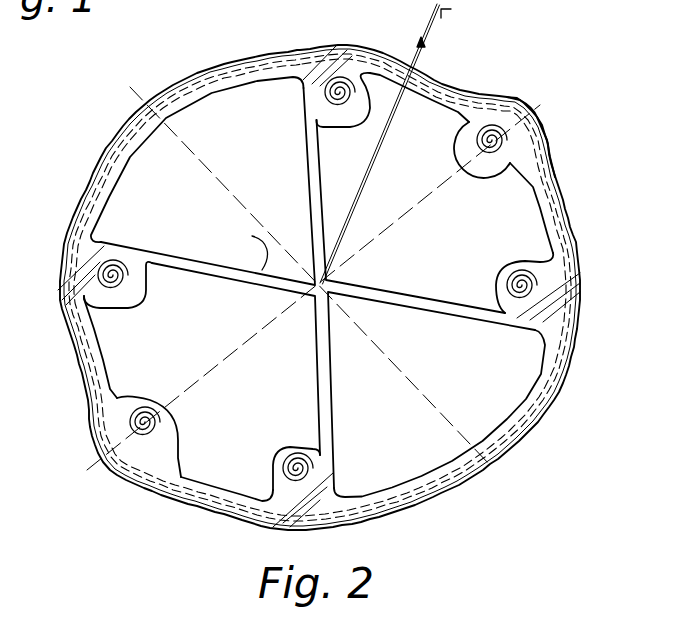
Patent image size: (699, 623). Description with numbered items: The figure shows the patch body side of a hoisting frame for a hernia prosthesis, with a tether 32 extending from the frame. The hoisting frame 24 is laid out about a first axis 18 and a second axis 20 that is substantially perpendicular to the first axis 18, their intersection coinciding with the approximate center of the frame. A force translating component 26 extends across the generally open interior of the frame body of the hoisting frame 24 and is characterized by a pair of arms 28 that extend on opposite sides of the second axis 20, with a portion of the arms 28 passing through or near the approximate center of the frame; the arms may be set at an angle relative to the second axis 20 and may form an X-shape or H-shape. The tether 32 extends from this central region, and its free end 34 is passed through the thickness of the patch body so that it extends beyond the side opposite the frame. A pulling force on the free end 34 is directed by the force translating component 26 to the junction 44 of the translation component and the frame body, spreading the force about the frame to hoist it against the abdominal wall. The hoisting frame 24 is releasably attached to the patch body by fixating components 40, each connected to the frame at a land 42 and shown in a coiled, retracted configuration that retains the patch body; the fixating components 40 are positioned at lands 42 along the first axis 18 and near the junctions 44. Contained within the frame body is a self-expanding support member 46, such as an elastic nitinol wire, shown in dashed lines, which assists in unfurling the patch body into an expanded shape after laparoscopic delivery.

The first axis 18 is at (540, 108).
The second axis 20 is at (512, 487).
The rim boss 24 is at (483, 95).
The force translating component 26 is at (303, 168).
The pair of arms 28 is at (310, 226).
The tether 32 is at (400, 100).
The free end 34 is at (462, 13).
The fixating component 40 is at (520, 264).
The land 42 is at (368, 76).
The junction 44 is at (294, 81).
The self-expanding support member 46 is at (566, 226).